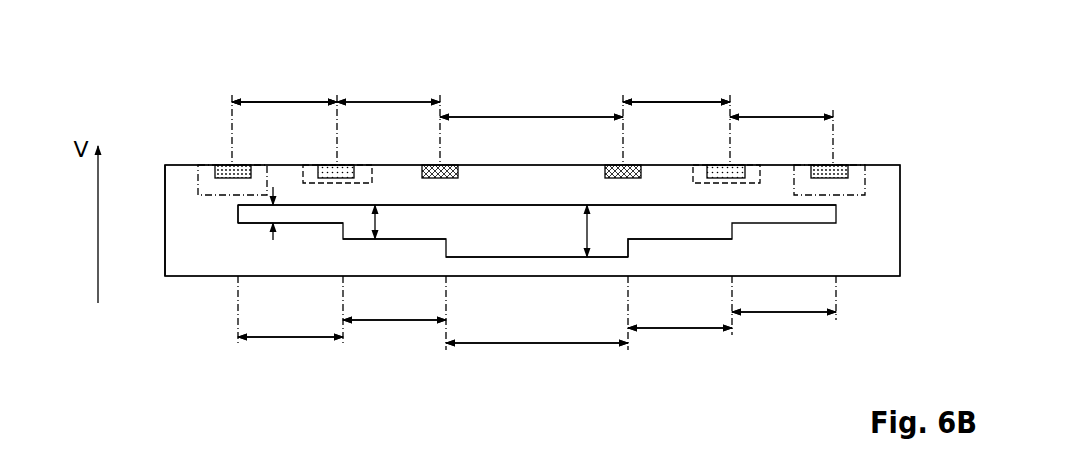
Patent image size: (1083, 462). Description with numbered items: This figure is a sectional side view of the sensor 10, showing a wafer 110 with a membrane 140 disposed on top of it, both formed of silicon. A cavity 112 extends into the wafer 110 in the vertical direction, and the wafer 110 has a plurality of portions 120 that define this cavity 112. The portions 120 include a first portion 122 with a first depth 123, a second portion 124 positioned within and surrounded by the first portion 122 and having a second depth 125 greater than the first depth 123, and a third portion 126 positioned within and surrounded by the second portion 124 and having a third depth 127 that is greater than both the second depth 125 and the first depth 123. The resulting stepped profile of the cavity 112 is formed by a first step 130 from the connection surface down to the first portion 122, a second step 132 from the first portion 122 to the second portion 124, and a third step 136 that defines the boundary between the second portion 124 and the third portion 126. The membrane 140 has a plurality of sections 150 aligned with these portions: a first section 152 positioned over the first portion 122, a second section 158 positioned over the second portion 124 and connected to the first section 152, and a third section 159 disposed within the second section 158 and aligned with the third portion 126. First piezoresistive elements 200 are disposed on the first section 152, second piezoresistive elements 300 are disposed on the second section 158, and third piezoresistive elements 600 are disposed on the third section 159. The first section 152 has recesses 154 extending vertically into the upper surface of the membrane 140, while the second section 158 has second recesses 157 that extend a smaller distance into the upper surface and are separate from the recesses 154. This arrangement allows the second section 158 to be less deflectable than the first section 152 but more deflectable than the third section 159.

The sensor 10 is at (907, 143).
The wafer 110 is at (193, 260).
The cavity 112 is at (536, 240).
The portions 120 is at (538, 347).
The first portion 122 is at (290, 340).
The first depth 123 is at (238, 218).
The second portion 124 is at (393, 323).
The second depth 125 is at (372, 215).
The third portion 126 is at (538, 347).
The third depth 127 is at (630, 237).
The first step 130 is at (238, 214).
The second step 132 is at (343, 224).
The third step 136 is at (447, 258).
The membrane 140 is at (173, 181).
The sections 150 is at (532, 117).
The first section 152 is at (290, 100).
The recesses 154 is at (203, 186).
The second recesses 157 is at (303, 175).
The second section 158 is at (390, 100).
The third section 159 is at (532, 117).
The first piezoresistive elements 200 is at (228, 165).
The second piezoresistive elements 300 is at (320, 165).
The third piezoresistive elements 600 is at (433, 165).